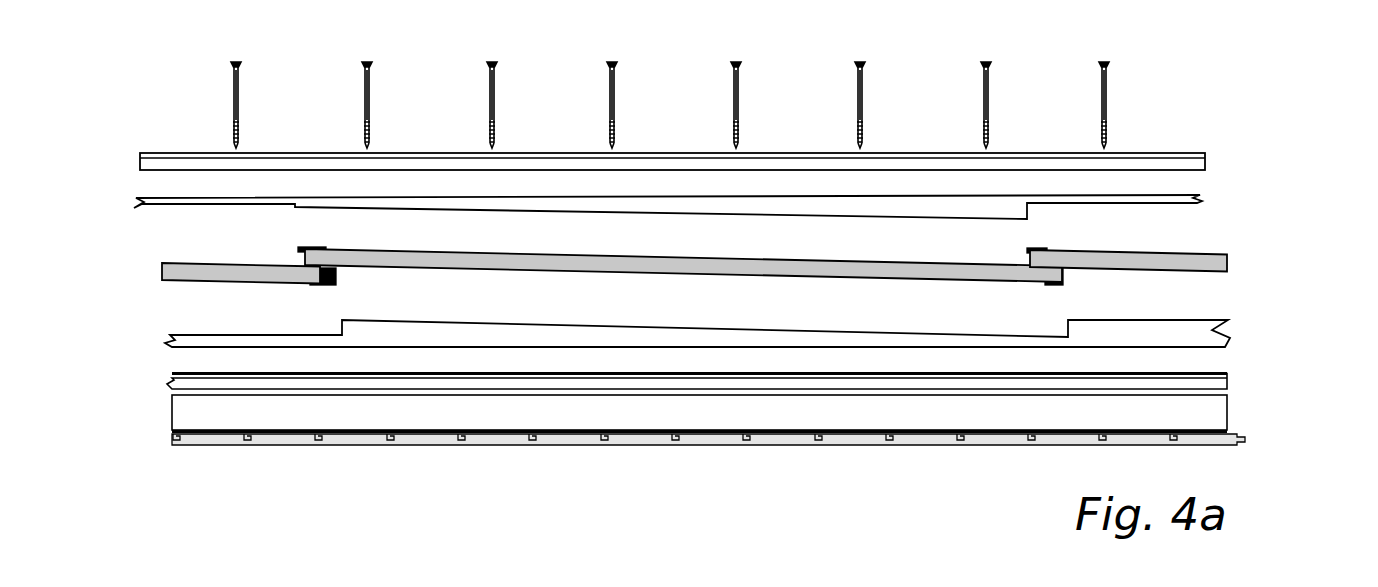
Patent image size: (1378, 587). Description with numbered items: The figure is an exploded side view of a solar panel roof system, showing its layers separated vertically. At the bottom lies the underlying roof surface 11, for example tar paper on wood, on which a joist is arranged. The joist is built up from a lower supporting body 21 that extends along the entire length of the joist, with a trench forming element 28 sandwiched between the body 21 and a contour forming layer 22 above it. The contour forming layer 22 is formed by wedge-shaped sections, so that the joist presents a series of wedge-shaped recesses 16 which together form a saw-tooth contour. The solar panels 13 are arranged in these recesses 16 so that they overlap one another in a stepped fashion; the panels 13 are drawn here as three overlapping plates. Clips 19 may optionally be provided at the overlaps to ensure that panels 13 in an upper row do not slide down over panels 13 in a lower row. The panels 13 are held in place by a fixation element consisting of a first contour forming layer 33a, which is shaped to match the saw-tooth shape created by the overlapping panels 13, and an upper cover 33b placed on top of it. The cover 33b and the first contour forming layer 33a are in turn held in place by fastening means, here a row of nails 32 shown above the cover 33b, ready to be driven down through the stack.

The nails 32 is at (1107, 92).
The upper cover 33b is at (1192, 150).
The first contour forming layer 33a is at (1188, 197).
The solar panels 13 is at (222, 268).
The clips 19 is at (312, 252).
The wedge-shaped recesses 16 is at (1010, 309).
The contour forming layer 22 is at (1218, 332).
The trench forming element 28 is at (1203, 382).
The lower supporting body 21 is at (1215, 420).
The roof surface 11 is at (1205, 447).